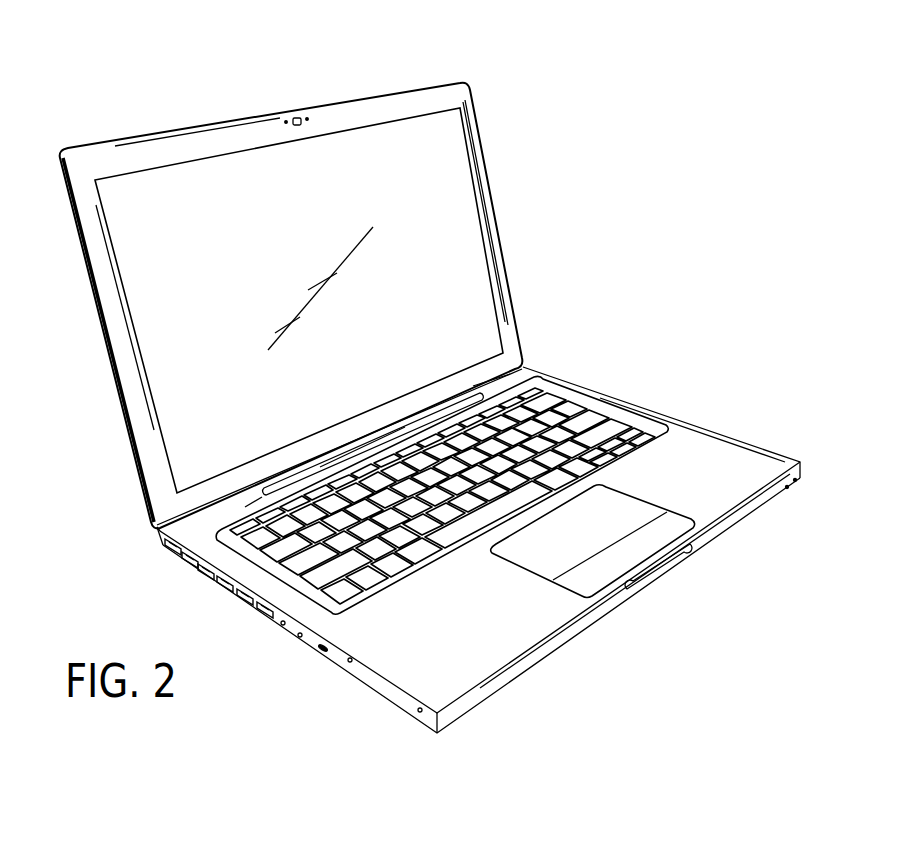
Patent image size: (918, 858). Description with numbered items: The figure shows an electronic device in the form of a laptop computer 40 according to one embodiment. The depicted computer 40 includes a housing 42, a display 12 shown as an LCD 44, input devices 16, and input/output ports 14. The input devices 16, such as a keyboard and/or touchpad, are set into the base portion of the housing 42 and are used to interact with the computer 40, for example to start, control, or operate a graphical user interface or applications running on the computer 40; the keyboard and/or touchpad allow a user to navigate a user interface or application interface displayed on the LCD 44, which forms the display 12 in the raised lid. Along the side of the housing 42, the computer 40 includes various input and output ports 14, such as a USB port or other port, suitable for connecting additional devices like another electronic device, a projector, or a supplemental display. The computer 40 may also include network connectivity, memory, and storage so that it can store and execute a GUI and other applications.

The display 12 is at (464, 248).
The input/output ports 14 is at (191, 572).
The input devices 16 is at (588, 415).
The laptop computer 40 is at (209, 95).
The housing 42 is at (668, 412).
The LCD 44 is at (455, 133).